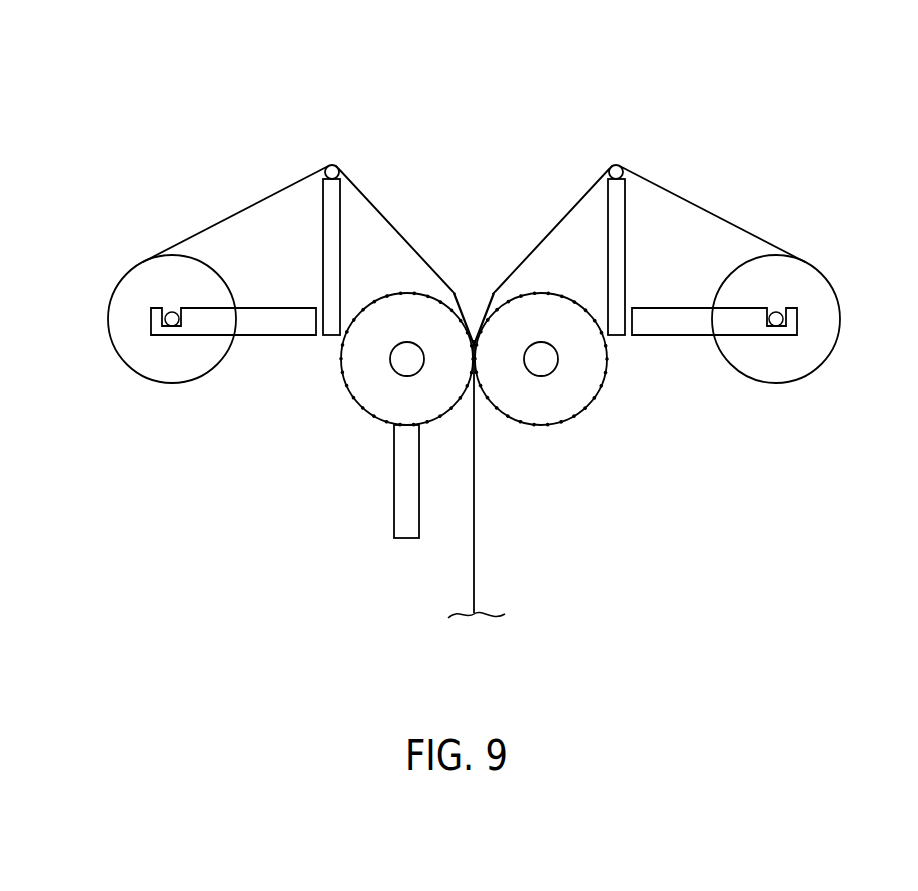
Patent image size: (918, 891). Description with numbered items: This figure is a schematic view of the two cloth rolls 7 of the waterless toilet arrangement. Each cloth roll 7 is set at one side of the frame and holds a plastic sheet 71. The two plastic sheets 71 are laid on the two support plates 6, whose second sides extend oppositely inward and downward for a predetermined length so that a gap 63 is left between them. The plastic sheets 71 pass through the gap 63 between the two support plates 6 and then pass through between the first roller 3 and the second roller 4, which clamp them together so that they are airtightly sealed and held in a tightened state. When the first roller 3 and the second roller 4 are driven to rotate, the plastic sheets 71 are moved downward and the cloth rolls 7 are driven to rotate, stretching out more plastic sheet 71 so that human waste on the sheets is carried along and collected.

The first roller 3 is at (382, 388).
The second roller 4 is at (566, 388).
The support plate 6 is at (365, 208).
The gap 63 is at (471, 297).
The cloth roll 7 is at (168, 383).
The plastic sheet 71 is at (237, 208).